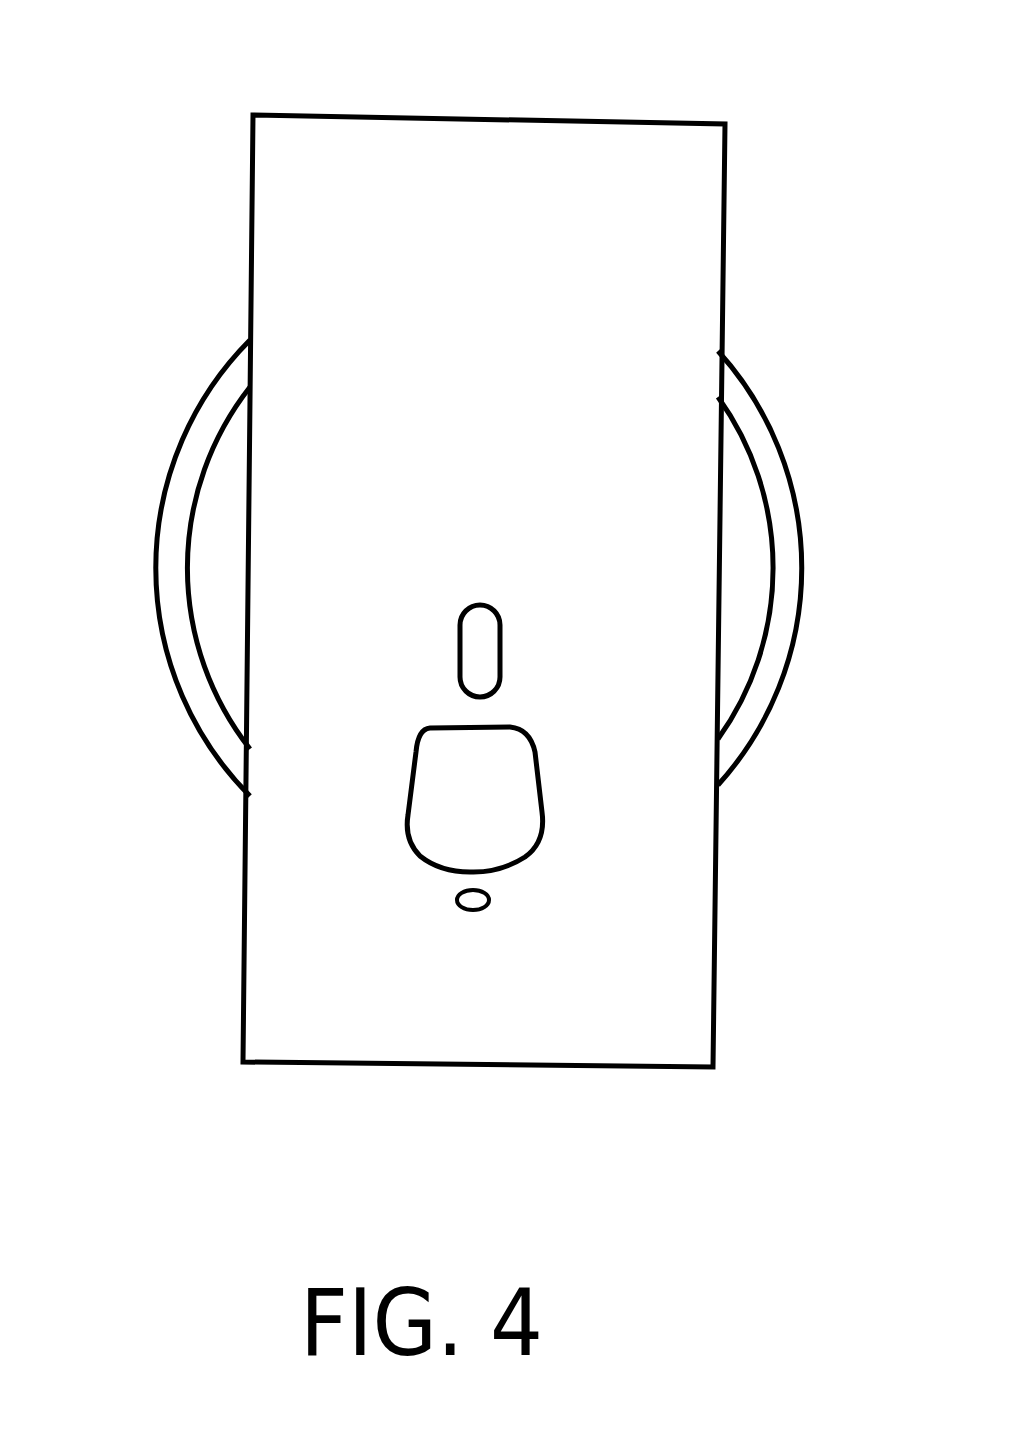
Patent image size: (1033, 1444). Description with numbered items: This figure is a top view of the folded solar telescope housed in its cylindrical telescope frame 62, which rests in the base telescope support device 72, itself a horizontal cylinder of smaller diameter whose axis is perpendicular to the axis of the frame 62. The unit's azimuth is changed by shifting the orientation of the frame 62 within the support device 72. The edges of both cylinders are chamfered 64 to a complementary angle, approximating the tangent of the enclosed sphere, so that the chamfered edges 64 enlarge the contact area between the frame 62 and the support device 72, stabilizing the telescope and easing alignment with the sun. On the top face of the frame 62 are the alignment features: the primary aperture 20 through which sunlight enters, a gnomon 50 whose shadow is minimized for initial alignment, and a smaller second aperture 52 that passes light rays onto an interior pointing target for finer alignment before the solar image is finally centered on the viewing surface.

The cylindrical telescope frame 62 is at (300, 115).
The chamfered edges 64 is at (252, 346).
The base telescope support device 72 is at (178, 517).
The gnomon 50 is at (497, 611).
The aperture 20 is at (513, 866).
The second aperture 52 is at (476, 912).